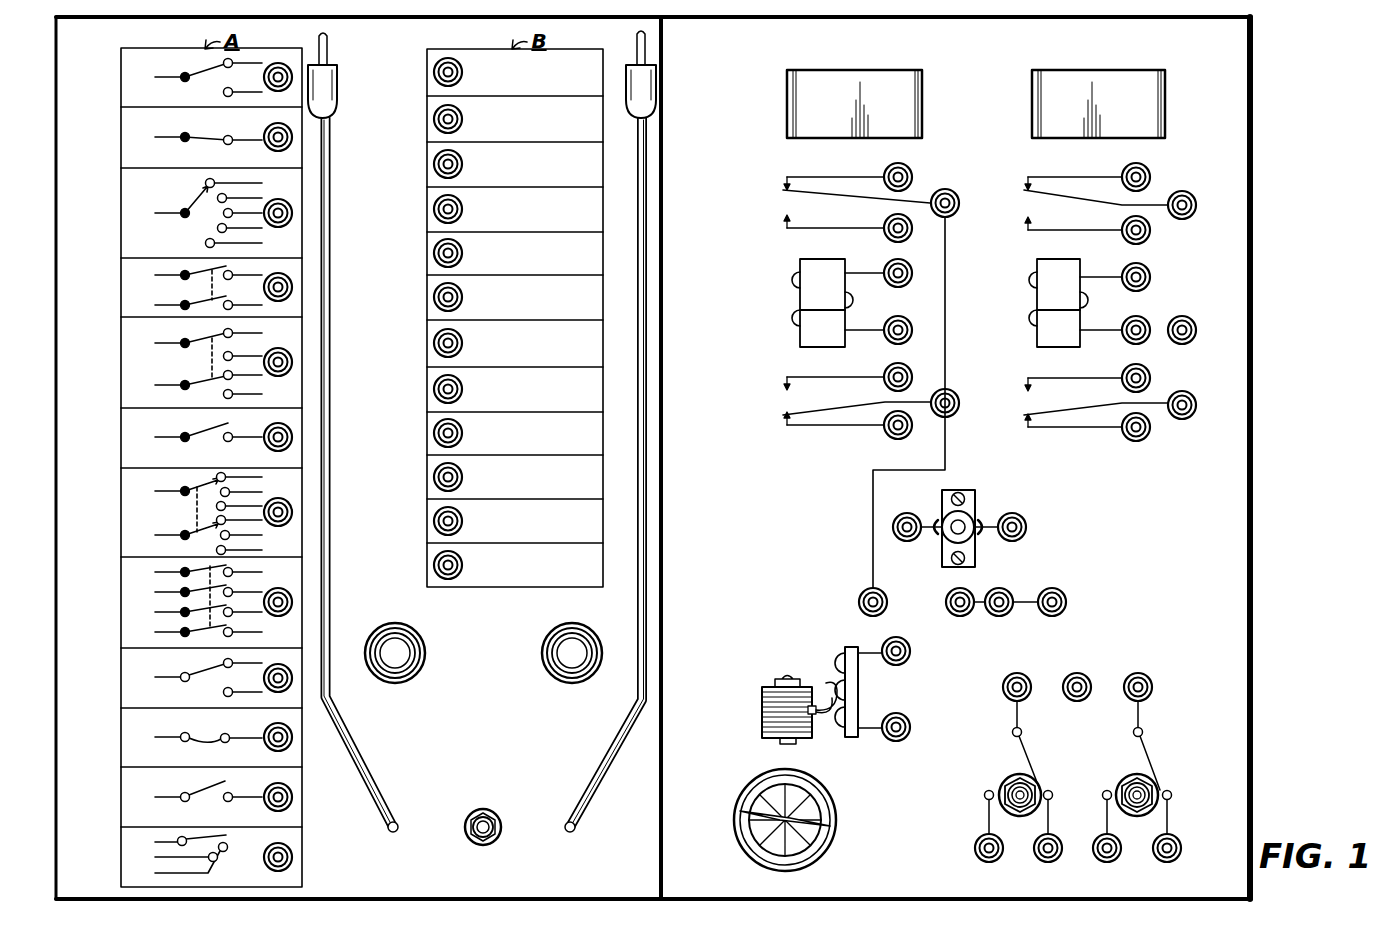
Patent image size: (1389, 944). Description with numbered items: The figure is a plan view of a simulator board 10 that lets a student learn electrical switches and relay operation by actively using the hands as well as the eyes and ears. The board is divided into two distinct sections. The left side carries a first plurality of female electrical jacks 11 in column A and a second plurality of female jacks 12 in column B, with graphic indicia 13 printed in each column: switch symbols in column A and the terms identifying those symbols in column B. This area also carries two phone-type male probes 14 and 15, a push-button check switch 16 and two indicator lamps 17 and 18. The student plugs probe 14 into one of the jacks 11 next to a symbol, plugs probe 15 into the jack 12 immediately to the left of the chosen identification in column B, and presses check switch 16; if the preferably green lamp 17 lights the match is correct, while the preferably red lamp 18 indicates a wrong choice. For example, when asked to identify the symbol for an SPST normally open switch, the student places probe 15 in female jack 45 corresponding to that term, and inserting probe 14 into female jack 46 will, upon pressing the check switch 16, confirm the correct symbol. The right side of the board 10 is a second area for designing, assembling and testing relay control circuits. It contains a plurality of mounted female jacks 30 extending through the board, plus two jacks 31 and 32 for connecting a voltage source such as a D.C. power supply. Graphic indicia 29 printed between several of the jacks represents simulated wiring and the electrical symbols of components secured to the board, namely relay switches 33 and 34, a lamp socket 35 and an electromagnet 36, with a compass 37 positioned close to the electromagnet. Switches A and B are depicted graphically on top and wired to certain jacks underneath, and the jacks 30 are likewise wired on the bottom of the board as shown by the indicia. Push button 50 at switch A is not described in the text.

The simulator board 10 is at (1243, 44).
The first plurality of electrical jacks 11 is at (292, 283).
The second plurality of jacks 12 is at (434, 246).
The graphic indicia 13 is at (118, 168).
The phone-type male probe 14 is at (337, 70).
The phone-type male probe 15 is at (628, 76).
The push-button type check switch 16 is at (490, 830).
The indicator lamp 17 is at (420, 640).
The indicator lamp 18 is at (557, 662).
The graphic indicia 29 is at (800, 280).
The mounted electrical jacks 30 is at (924, 172).
The jack 31 is at (882, 592).
The jack 32 is at (965, 590).
The relay switch 33 is at (852, 70).
The relay switch 34 is at (1124, 70).
The lamp socket 35 is at (978, 514).
The electromagnet 36 is at (762, 700).
The compass 37 is at (833, 798).
The female jack 45 is at (434, 119).
The female jack 46 is at (292, 434).
The push button switch 50 is at (1016, 790).